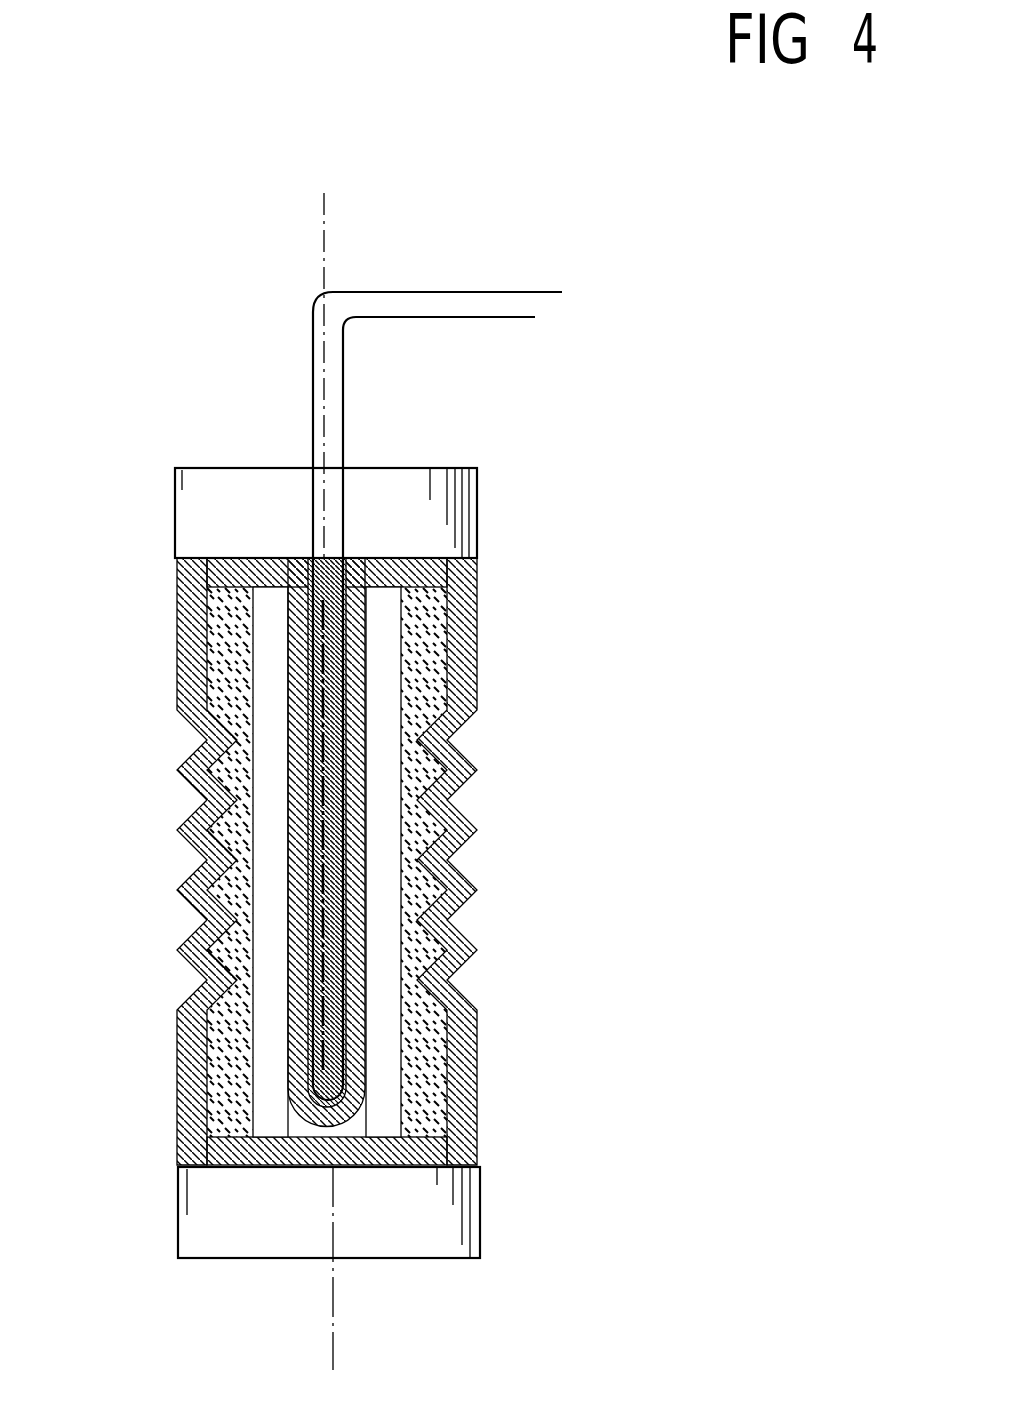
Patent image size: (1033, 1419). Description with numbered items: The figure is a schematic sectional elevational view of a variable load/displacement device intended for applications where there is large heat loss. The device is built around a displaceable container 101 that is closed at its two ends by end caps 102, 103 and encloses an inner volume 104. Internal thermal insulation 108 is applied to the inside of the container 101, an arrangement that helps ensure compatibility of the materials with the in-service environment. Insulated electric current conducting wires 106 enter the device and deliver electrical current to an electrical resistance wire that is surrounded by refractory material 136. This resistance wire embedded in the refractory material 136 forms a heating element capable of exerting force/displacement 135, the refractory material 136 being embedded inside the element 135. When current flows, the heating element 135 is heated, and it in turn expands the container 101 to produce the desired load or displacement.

The displaceable container 101 is at (485, 1063).
The end cap 102 is at (433, 1217).
The end cap 103 is at (417, 522).
The inner volume 104 is at (383, 657).
The insulated electric current conducting wires 106 is at (340, 360).
The internal thermal insulation 108 is at (412, 770).
The heating element capable of exerting force/displacement 135 is at (373, 1033).
The refractory material 136 is at (312, 970).